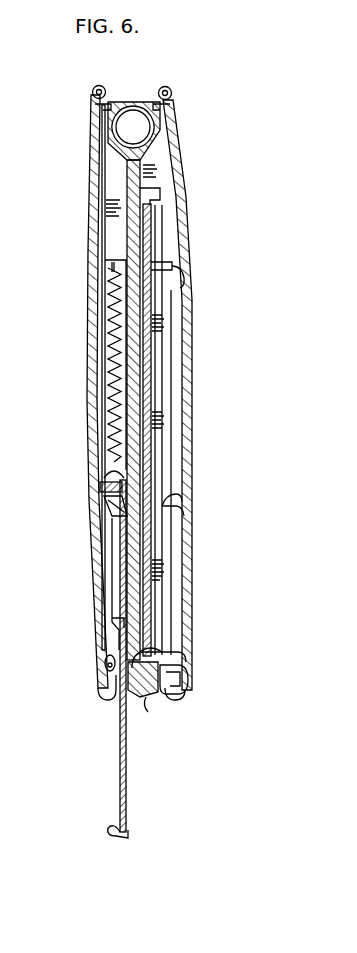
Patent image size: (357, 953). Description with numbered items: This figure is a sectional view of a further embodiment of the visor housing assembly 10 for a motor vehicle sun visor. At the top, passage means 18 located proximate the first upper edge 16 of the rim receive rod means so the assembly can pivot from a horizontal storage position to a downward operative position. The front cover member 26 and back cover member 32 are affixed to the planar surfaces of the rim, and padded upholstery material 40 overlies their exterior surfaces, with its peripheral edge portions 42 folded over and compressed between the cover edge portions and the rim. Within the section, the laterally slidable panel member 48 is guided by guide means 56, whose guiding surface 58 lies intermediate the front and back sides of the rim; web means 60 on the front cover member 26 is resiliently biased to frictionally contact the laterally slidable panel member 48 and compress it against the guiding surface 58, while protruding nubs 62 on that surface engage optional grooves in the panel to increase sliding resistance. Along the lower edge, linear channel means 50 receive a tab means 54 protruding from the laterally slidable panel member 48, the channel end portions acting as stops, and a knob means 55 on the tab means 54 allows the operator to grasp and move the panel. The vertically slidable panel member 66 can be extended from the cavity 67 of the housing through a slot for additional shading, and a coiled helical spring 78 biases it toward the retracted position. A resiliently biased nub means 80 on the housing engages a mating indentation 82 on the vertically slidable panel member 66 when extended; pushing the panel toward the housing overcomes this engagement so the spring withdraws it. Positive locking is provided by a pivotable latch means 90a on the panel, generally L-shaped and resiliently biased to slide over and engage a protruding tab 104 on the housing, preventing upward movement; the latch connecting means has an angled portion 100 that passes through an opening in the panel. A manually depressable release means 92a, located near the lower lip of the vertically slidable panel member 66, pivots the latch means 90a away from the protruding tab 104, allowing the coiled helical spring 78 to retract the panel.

The visor housing assembly 10 is at (206, 128).
The first upper edge 16 is at (140, 97).
The passage means 18 is at (127, 118).
The front cover member 26 is at (192, 458).
The back cover member 32 is at (97, 385).
The padded upholstery material 40 is at (172, 90).
The peripheral edge portions 42 is at (105, 697).
The laterally slidable panel member 48 is at (152, 247).
The linear channel means 50 is at (168, 670).
The tab means 54 is at (190, 690).
The knob means 55 is at (148, 698).
The guide means 56 is at (160, 195).
The guiding surface 58 is at (133, 364).
The web means 60 is at (178, 272).
The protruding nubs 62 is at (152, 222).
The vertically slidable panel member 66 is at (128, 775).
The cavity 67 is at (113, 588).
The coiled helical spring 78 is at (108, 325).
The resiliently biased nub means 80 is at (158, 660).
The mating indentation 82 is at (115, 655).
The pivotable latch means 90a is at (98, 503).
The manually depressable release means 92a is at (112, 835).
The angled portion 100 is at (122, 622).
The protruding tab 104 is at (105, 488).